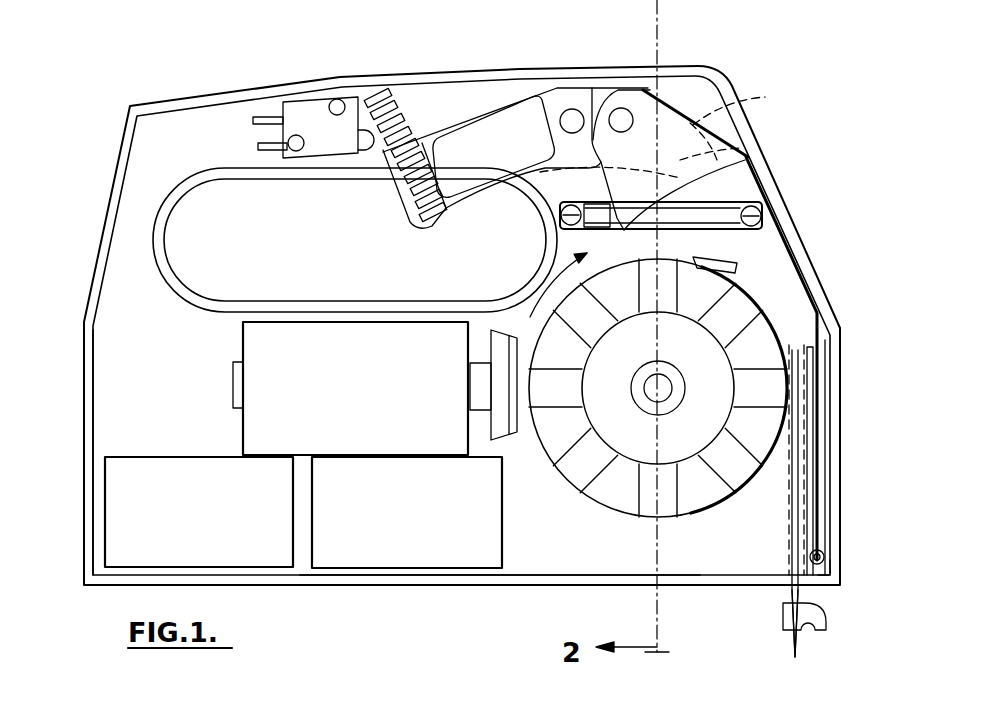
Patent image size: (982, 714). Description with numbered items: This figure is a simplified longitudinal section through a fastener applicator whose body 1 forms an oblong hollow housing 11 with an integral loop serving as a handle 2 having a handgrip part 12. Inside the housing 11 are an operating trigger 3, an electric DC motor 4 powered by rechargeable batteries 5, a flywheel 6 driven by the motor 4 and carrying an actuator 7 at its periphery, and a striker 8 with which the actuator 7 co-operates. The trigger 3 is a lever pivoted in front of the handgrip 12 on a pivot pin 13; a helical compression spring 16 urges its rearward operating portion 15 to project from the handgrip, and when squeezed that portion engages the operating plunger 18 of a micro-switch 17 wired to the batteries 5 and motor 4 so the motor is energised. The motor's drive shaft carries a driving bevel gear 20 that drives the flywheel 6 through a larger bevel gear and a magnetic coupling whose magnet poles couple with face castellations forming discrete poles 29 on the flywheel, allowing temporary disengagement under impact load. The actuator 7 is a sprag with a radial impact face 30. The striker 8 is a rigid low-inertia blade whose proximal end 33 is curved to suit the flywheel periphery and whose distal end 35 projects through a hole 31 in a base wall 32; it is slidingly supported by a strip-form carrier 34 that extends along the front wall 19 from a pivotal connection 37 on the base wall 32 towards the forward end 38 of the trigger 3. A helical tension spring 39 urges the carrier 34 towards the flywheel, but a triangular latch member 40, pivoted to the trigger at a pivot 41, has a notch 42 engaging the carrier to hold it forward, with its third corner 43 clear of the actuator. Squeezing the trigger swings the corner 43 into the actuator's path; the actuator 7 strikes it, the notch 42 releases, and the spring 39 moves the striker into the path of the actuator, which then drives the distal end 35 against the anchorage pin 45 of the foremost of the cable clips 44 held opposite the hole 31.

The body 1 is at (103, 200).
The handle 2 is at (125, 262).
The operating trigger 3 is at (506, 124).
The electric DC motor 4 is at (375, 396).
The rechargeable batteries 5 is at (208, 532).
The flywheel 6 is at (658, 412).
The actuator 7 is at (765, 236).
The striker 8 is at (808, 442).
The housing 11 is at (120, 438).
The handgrip part 12 is at (205, 132).
The pivot pin 13 is at (568, 117).
The rearward operating portion 15 is at (462, 143).
The helical compression spring 16 is at (405, 98).
The micro-switch 17 is at (303, 118).
The operating plunger 18 is at (366, 140).
The front wall 19 is at (833, 503).
The driving bevel gear 20 is at (507, 413).
The poles 29 is at (730, 470).
The radial impact face 30 is at (717, 263).
The hole 31 is at (812, 590).
The base wall 32 is at (458, 578).
The proximal end 33 is at (812, 353).
The carrier 34 is at (760, 240).
The distal end 35 is at (790, 592).
The pivotal connection 37 is at (825, 557).
The forward end 38 is at (670, 132).
The helical tension spring 39 is at (575, 232).
The triangular latch member 40 is at (708, 124).
The pivot 41 is at (615, 118).
The notch 42 is at (750, 163).
The third corner 43 is at (547, 260).
The cable clips 44 is at (822, 620).
The anchorage pin 45 is at (792, 652).